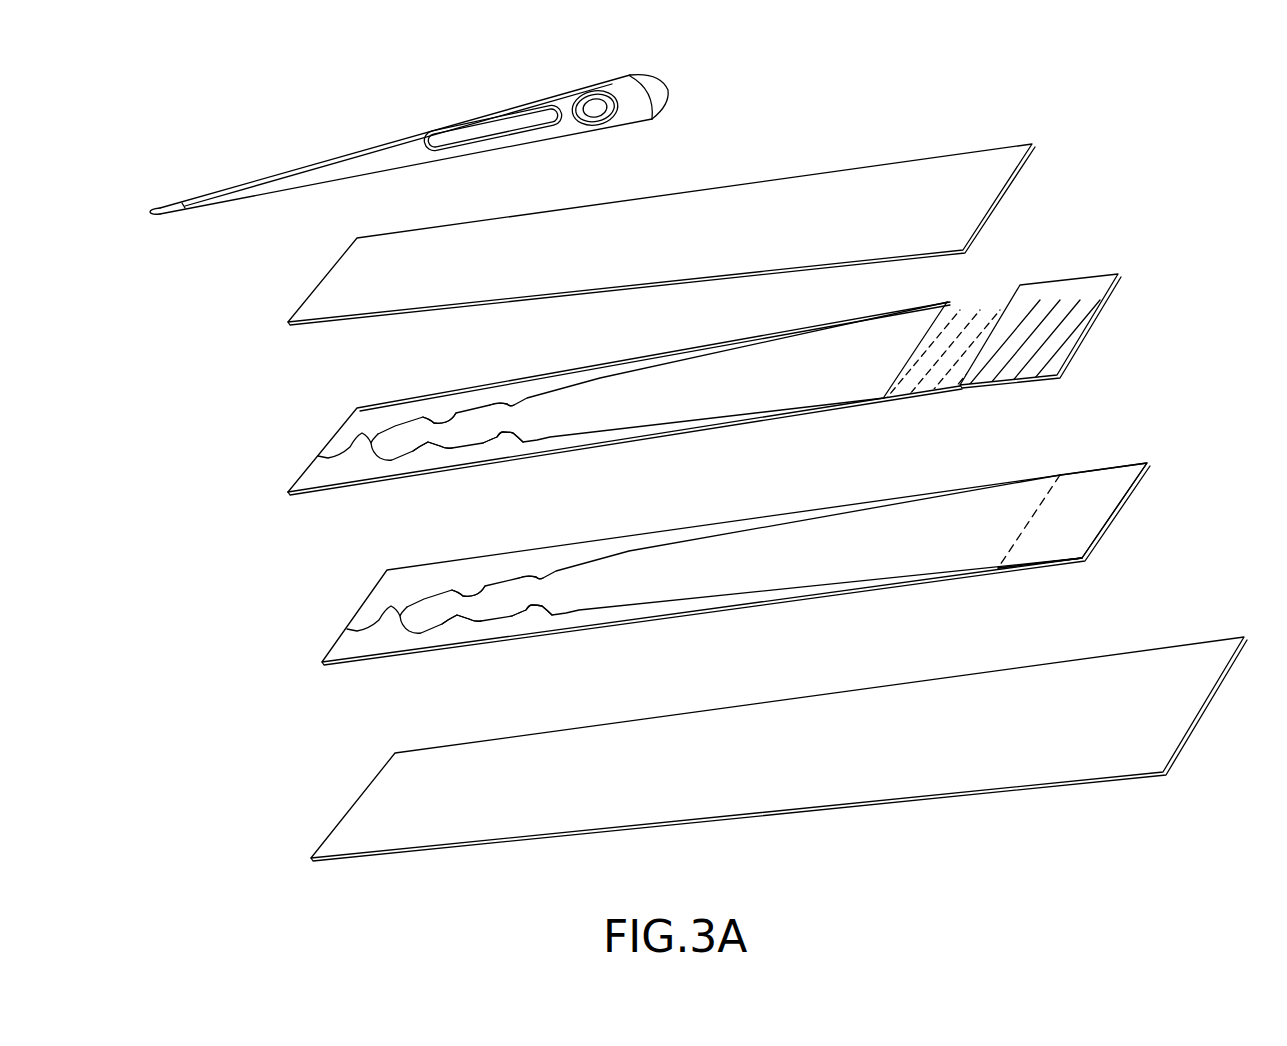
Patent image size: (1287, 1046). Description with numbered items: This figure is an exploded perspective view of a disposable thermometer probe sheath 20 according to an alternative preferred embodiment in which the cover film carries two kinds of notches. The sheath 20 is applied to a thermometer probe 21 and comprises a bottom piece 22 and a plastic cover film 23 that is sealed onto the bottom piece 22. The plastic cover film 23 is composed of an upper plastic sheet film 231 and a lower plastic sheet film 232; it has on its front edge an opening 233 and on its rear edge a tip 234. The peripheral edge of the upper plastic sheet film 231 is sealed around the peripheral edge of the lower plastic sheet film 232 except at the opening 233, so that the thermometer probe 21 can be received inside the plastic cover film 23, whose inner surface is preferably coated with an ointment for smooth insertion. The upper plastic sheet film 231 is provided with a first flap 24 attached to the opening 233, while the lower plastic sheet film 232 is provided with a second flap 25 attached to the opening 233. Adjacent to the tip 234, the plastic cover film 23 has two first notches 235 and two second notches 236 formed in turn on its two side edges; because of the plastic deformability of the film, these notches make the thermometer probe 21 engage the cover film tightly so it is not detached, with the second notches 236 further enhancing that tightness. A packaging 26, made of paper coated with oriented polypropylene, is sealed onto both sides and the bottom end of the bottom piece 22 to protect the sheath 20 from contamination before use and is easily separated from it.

The disposable thermometer probe sheath 20 is at (1212, 226).
The thermometer probe 21 is at (178, 215).
The bottom piece 22 is at (783, 770).
The plastic cover film 23 is at (240, 433).
The first flap 24 is at (1040, 330).
The second flap 25 is at (1062, 530).
The packaging 26 is at (968, 188).
The upper plastic sheet film 231 is at (745, 382).
The lower plastic sheet film 232 is at (745, 572).
The opening 233 is at (1027, 530).
The tip 234 is at (322, 456).
The first notches 235 is at (438, 393).
The second notches 236 is at (508, 405).